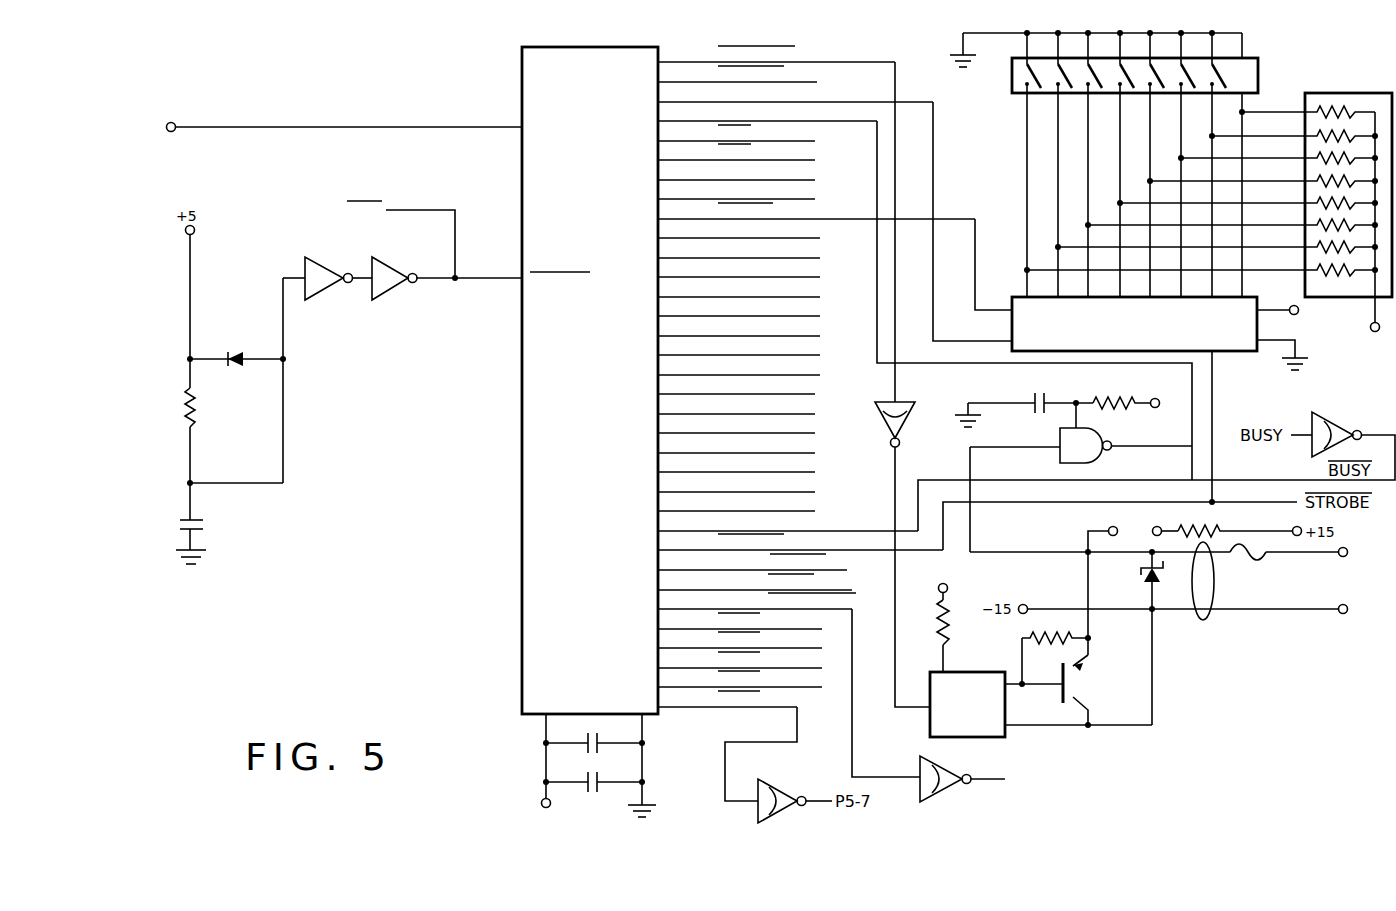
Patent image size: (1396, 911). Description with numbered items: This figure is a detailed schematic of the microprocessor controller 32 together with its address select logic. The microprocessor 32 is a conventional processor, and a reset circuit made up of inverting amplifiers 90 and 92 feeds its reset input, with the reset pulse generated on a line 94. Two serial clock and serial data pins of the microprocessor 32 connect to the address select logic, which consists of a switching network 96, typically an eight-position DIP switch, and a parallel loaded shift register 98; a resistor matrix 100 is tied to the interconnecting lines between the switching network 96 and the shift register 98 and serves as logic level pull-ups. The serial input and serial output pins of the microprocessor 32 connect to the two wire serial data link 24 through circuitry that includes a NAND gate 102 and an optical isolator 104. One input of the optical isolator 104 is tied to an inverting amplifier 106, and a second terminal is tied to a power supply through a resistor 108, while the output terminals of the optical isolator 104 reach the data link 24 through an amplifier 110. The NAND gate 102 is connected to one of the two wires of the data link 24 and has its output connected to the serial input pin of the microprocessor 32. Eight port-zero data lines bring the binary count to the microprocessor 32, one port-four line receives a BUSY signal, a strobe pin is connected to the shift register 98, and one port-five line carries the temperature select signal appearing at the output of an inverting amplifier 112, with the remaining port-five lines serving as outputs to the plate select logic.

The microprocessor controller 32 is at (608, 202).
The inverting amplifier 90 is at (327, 291).
The inverting amplifier 92 is at (395, 291).
The line 94 is at (430, 210).
The switching network 96 is at (1012, 81).
The parallel loaded shift register 98 is at (1240, 353).
The resistor matrix 100 is at (1354, 93).
The NAND gate 102 is at (1102, 440).
The optical isolator 104 is at (985, 715).
The inverting amplifier 106 is at (919, 404).
The resistor 108 is at (948, 616).
The amplifier 110 is at (1075, 699).
The inverting amplifier 112 is at (939, 767).
The two wire serial data link 24 is at (1203, 620).